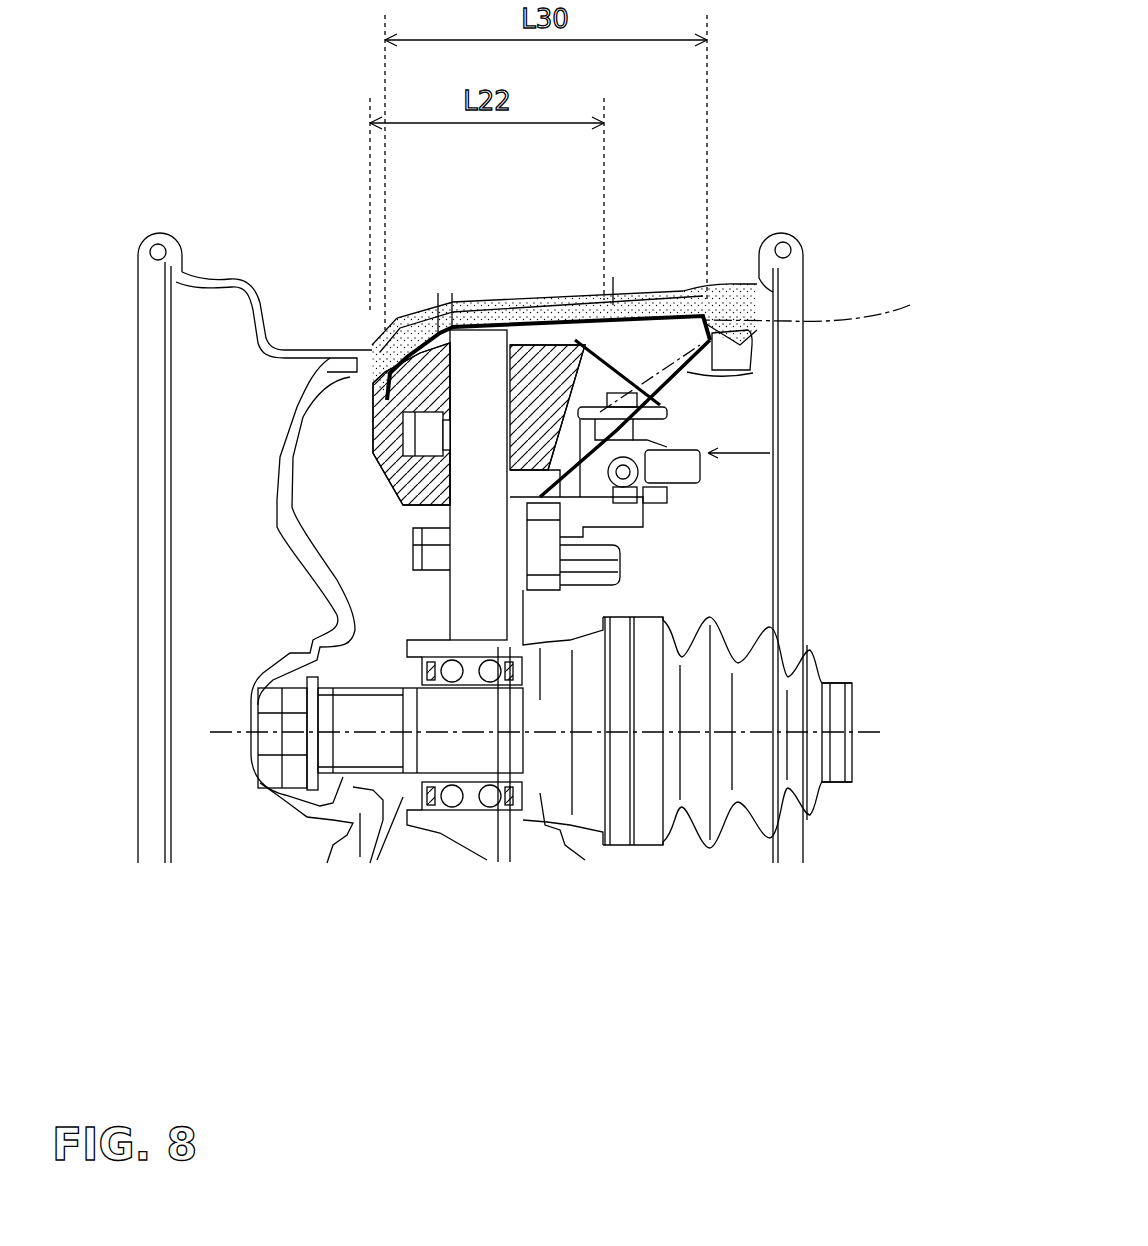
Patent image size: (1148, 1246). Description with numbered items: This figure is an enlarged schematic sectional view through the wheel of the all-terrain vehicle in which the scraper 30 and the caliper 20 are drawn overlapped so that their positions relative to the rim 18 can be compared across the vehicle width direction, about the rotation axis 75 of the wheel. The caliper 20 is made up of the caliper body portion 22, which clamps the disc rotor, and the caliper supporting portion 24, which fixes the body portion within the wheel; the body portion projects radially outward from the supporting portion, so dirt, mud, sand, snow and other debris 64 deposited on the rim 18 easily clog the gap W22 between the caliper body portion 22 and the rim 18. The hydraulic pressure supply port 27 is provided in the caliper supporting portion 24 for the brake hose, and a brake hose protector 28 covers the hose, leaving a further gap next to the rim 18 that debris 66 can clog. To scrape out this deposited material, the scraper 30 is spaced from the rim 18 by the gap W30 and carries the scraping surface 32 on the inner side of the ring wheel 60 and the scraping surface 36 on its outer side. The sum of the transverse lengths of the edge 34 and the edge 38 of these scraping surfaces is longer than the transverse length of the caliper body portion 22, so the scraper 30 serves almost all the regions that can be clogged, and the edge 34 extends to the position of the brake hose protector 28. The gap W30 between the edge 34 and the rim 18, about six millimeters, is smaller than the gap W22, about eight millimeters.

The rim 18 is at (432, 325).
The caliper 20 is at (770, 453).
The caliper body portion 22 is at (372, 418).
The caliper supporting portion 24 is at (650, 520).
The hydraulic pressure supply port 27 is at (690, 437).
The brake hose protector 28 is at (677, 392).
The scraper 30 is at (720, 382).
The scraping surface 32 is at (775, 352).
The edge 34 is at (690, 287).
The scraping surface 36 is at (373, 378).
The edge 38 is at (395, 308).
The ring wheel 60 is at (505, 850).
The dirt, mud, sand, snow and other debris 64 is at (490, 300).
The dirt, mud, sand, snow and other debris 66 is at (757, 222).
The rotation axis 75 is at (213, 735).
The gap W22 is at (455, 293).
The gap W30 is at (627, 297).